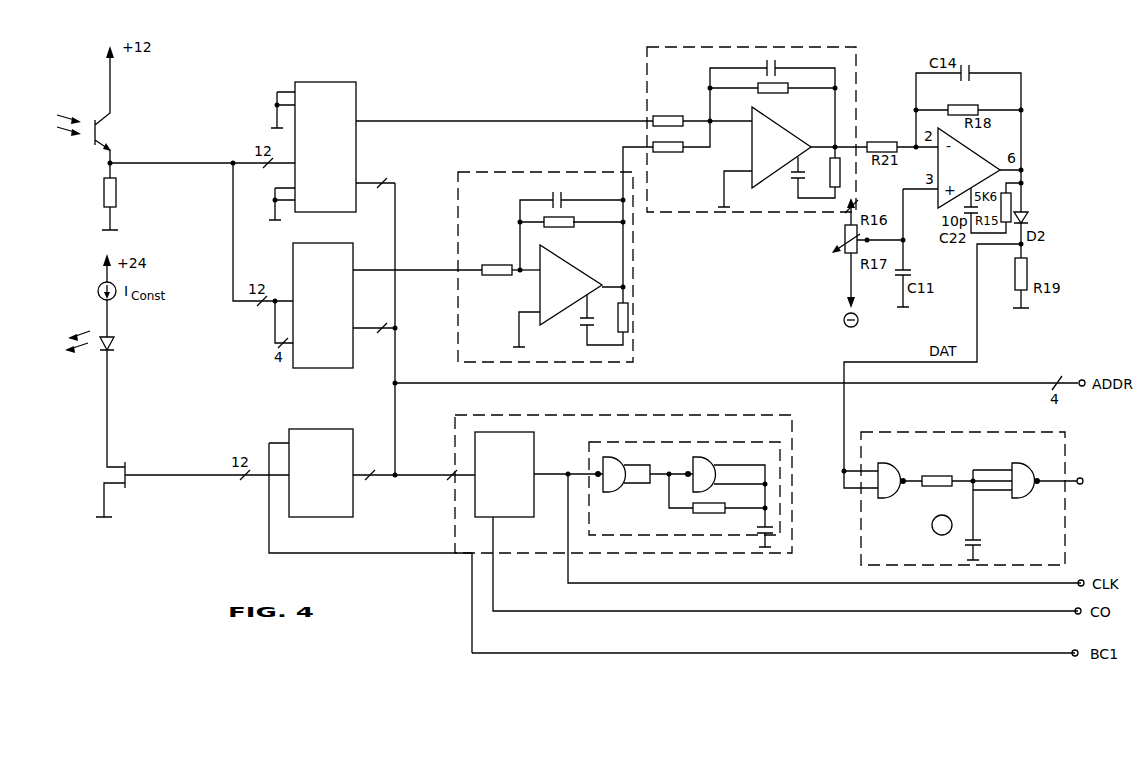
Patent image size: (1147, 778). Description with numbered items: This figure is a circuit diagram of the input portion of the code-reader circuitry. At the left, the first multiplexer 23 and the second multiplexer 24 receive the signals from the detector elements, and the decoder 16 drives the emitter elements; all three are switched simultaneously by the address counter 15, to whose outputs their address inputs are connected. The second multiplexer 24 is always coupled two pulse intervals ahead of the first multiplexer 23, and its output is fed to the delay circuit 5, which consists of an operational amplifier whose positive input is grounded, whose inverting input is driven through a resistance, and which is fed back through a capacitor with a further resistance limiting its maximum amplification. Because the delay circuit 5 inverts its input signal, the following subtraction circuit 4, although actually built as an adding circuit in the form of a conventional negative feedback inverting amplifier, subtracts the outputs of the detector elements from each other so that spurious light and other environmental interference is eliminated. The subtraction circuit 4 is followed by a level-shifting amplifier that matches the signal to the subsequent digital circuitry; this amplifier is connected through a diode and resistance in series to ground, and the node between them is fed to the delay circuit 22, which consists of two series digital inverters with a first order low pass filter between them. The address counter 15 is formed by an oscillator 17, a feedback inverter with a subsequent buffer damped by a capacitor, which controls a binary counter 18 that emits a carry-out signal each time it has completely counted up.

The subtraction circuit 4 is at (662, 65).
The delay circuit 5 is at (618, 357).
The address counter 15 is at (723, 428).
The decoder 16 is at (343, 430).
The oscillator 17 is at (626, 525).
The binary counter 18 is at (522, 451).
The delay circuit 22 is at (1035, 528).
The first multiplexer 23 is at (356, 90).
The second multiplexer 24 is at (330, 249).